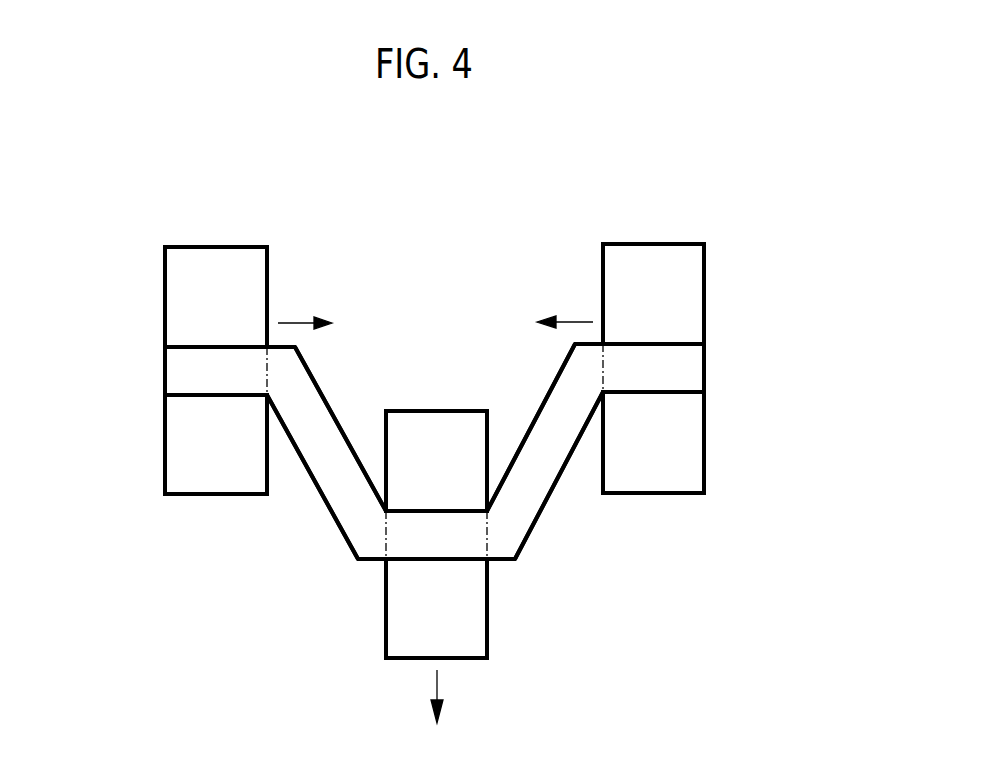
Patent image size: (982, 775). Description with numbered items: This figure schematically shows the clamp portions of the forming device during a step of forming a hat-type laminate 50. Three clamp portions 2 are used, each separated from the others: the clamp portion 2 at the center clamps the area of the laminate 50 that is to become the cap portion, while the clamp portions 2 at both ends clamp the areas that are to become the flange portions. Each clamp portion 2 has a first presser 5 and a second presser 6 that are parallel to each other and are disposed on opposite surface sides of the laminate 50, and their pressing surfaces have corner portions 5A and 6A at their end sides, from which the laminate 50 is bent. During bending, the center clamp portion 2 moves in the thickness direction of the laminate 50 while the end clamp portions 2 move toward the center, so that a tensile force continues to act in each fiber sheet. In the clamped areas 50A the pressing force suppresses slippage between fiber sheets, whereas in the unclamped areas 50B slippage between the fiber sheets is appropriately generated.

The clamp portion 2 is at (222, 235).
The first presser 5 is at (165, 280).
The second presser 6 is at (165, 463).
The laminate 50 is at (320, 390).
The area clamped by the clamp portion 50A is at (186, 376).
The area where slippage between fiber sheets is not suppressed 50B is at (322, 489).
The corner portion 5A is at (393, 501).
The corner portion 6A is at (259, 402).